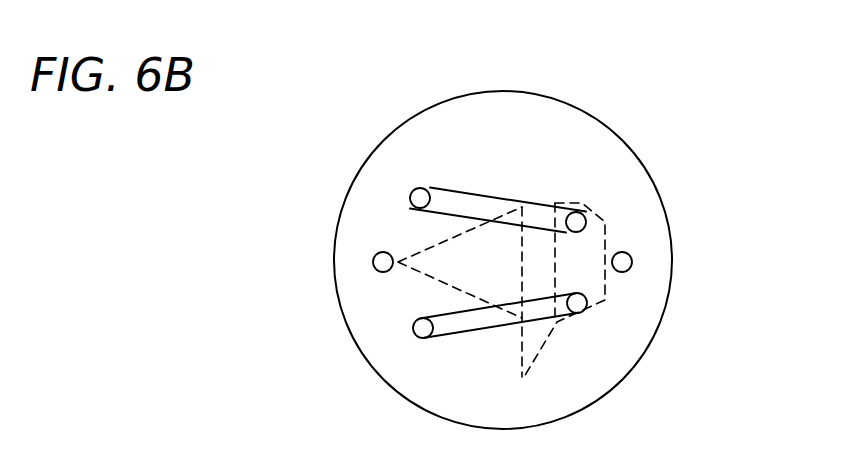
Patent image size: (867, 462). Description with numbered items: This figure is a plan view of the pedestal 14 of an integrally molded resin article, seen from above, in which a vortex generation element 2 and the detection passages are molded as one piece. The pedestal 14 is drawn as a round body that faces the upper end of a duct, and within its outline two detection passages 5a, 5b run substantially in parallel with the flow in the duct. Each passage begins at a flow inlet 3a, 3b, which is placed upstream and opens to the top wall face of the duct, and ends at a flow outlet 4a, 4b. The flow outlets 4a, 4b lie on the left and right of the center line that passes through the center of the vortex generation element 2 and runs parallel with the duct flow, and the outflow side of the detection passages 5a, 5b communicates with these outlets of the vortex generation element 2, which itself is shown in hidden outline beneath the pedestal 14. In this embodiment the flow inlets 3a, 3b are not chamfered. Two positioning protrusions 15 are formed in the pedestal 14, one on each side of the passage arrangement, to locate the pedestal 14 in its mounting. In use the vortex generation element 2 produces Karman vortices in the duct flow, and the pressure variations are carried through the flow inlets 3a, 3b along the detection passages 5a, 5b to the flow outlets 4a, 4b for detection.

The pedestal 14 is at (499, 92).
The flow inlet 3a is at (413, 331).
The flow inlet 3b is at (410, 197).
The flow outlet 4a is at (588, 303).
The flow outlet 4b is at (587, 217).
The detection passage 5a is at (533, 205).
The detection passage 5b is at (538, 313).
The positioning protrusions 15 is at (372, 262).
The vortex generation element 2 is at (501, 309).